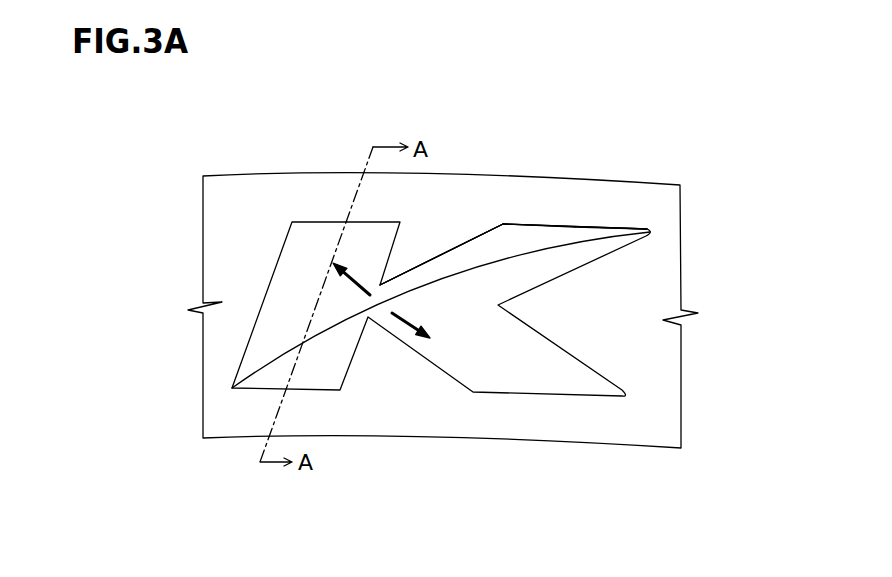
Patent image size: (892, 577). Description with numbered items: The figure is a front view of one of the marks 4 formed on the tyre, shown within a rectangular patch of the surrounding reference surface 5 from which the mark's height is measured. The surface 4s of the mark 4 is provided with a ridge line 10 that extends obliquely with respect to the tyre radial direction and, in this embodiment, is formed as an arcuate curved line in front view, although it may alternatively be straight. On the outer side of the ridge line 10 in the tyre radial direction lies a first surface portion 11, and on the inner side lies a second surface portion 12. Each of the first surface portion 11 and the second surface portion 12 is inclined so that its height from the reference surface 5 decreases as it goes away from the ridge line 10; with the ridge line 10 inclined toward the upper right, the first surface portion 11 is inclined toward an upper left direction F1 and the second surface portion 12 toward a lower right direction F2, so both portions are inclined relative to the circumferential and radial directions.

The mark 4 is at (632, 282).
The surface of the mark 4s is at (638, 104).
The substrate (X) 5 is at (655, 365).
The ridge line 10 is at (543, 253).
The first surface portion 11 is at (480, 253).
The second surface portion 12 is at (578, 258).
The upper left direction F1 is at (350, 288).
The lower right direction F2 is at (403, 320).